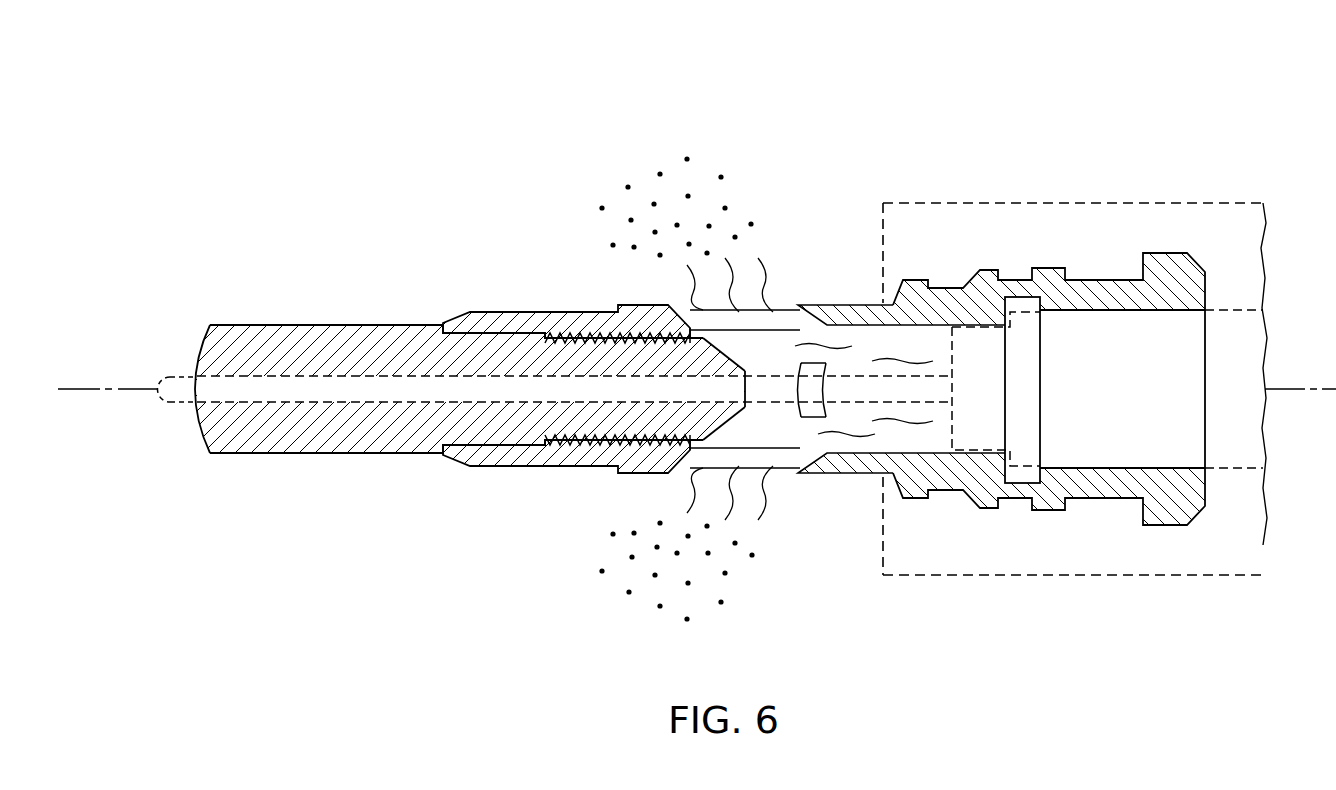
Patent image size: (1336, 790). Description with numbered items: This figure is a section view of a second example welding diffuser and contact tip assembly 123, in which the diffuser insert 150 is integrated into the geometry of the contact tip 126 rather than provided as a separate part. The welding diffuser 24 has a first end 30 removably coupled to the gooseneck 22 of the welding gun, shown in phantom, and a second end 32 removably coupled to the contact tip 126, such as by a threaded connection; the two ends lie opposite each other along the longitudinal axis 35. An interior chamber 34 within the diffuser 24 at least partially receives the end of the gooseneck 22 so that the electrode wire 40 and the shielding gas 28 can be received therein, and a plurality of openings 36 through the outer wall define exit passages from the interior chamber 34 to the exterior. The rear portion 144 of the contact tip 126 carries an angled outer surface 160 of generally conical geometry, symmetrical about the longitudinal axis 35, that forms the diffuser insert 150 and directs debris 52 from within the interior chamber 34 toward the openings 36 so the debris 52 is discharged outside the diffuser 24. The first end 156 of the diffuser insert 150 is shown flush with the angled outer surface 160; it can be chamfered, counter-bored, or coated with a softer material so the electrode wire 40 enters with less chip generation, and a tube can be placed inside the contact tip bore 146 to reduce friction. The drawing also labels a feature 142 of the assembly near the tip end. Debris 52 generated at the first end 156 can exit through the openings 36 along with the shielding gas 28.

The gooseneck 22 is at (1224, 203).
The welding diffuser 24 is at (868, 308).
The shielding gas 28 is at (848, 393).
The first end 30 is at (1078, 316).
The second end 32 is at (516, 420).
The interior chamber 34 is at (910, 342).
The longitudinal axis 35 is at (90, 392).
The openings 36 is at (762, 393).
The electrode wire 40 is at (178, 403).
The debris 52 is at (633, 391).
The welding diffuser and contact tip assembly 123 is at (516, 343).
The contact tip 126 is at (318, 334).
The nozzle 142 is at (516, 379).
The rear portion 144 is at (728, 434).
The contact tip bore 146 is at (145, 380).
The diffuser insert 150 is at (700, 358).
The first end 156 is at (752, 403).
The angled outer surface 160 is at (730, 348).